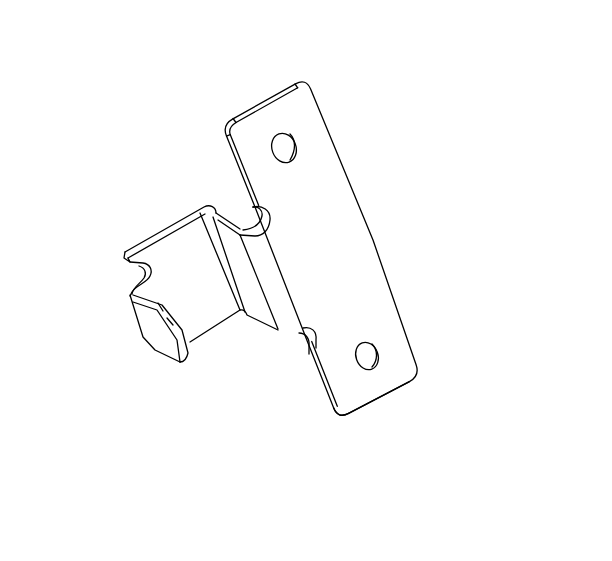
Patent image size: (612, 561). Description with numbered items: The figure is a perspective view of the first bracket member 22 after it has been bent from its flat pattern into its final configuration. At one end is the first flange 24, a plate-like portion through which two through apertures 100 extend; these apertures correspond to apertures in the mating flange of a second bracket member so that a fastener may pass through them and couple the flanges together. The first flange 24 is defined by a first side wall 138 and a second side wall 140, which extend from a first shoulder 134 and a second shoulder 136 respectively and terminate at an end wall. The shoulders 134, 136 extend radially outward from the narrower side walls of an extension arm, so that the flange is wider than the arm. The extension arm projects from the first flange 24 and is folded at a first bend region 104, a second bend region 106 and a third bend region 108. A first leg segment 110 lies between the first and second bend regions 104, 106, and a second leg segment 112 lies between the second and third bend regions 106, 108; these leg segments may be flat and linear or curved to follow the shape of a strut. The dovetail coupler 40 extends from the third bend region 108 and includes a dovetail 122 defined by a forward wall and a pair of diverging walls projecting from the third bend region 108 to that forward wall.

The first bracket member 22 is at (189, 402).
The first flange 24 is at (330, 240).
The dovetail coupler 40 is at (146, 354).
The through aperture 100 is at (295, 147).
The first bend region 104 is at (289, 335).
The second bend region 106 is at (200, 205).
The third bend region 108 is at (125, 279).
The first leg segment 110 is at (262, 326).
The second leg segment 112 is at (146, 235).
The dovetail 122 is at (153, 327).
The first shoulder 134 is at (322, 404).
The second shoulder 136 is at (232, 163).
The first side wall 138 is at (388, 398).
The second side wall 140 is at (265, 100).